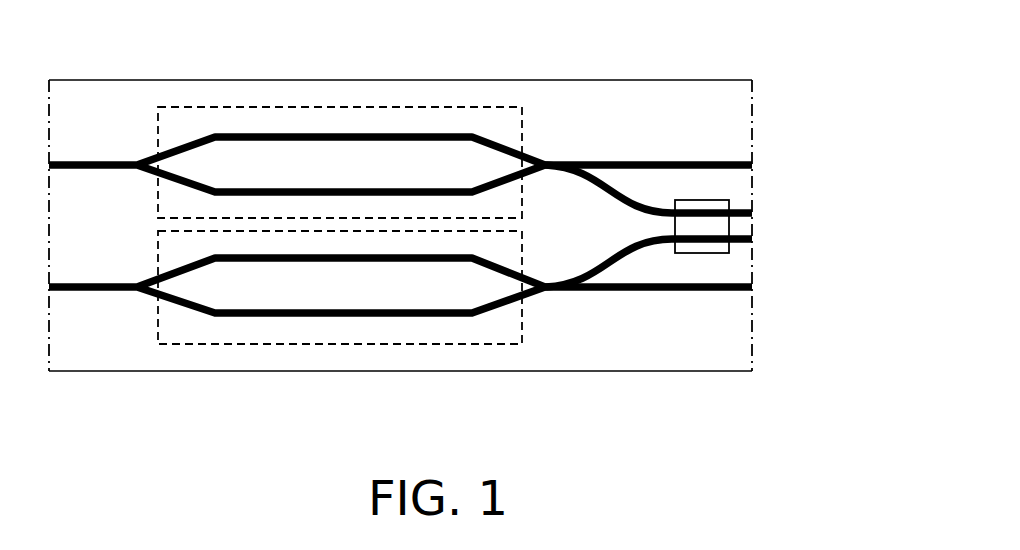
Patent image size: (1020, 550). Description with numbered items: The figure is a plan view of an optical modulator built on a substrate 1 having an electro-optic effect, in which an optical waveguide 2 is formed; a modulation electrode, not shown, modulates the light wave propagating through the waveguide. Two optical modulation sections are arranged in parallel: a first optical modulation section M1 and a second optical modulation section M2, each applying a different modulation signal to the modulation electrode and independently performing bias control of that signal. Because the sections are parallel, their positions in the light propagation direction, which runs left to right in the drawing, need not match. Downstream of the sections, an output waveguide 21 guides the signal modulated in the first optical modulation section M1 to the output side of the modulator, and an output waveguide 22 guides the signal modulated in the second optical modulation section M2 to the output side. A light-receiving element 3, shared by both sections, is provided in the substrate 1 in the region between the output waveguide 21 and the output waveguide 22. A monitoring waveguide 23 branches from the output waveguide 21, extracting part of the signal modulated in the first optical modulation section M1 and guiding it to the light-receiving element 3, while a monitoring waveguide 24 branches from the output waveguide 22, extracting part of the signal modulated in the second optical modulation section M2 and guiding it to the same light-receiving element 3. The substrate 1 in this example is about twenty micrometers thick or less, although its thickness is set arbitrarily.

The substrate 1 is at (570, 115).
The optical waveguide 2 is at (439, 185).
The light-receiving element 3 is at (687, 198).
The first optical modulation section M1 is at (418, 107).
The second optical modulation section M2 is at (418, 344).
The output waveguide 21 is at (720, 162).
The output waveguide 22 is at (728, 293).
The monitoring waveguide 23 is at (748, 208).
The monitoring waveguide 24 is at (748, 242).